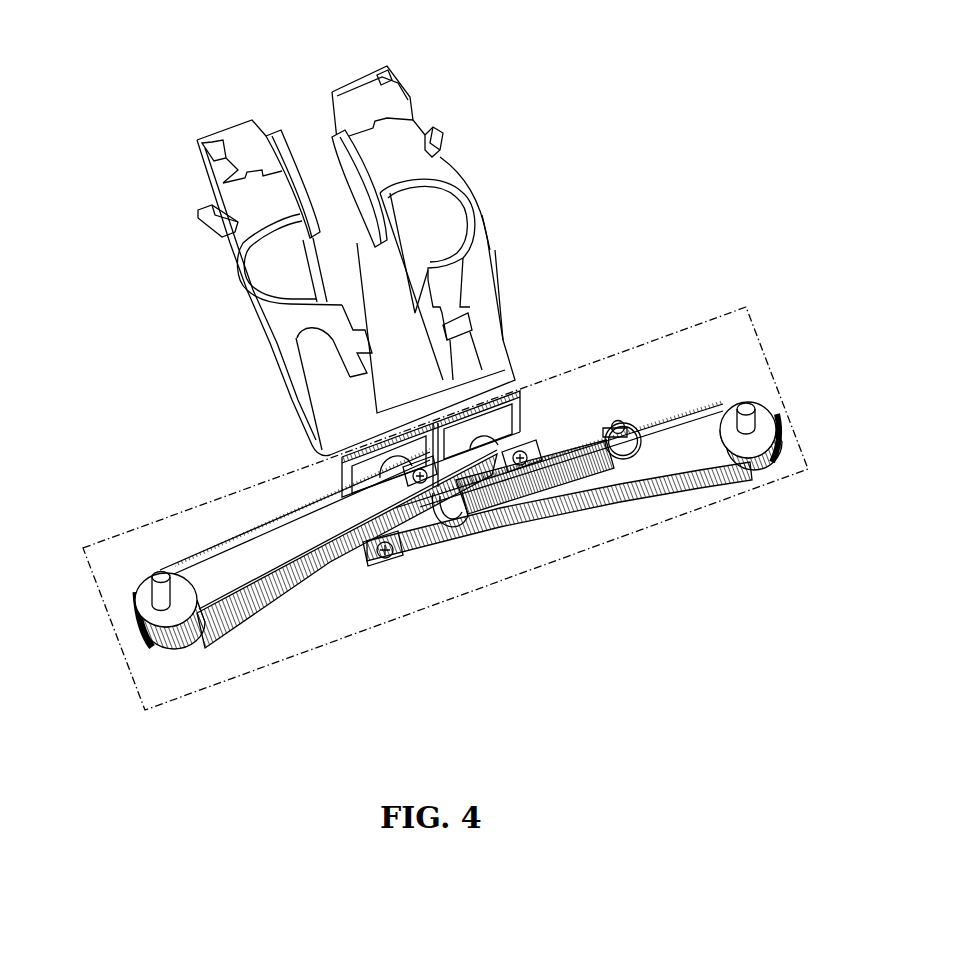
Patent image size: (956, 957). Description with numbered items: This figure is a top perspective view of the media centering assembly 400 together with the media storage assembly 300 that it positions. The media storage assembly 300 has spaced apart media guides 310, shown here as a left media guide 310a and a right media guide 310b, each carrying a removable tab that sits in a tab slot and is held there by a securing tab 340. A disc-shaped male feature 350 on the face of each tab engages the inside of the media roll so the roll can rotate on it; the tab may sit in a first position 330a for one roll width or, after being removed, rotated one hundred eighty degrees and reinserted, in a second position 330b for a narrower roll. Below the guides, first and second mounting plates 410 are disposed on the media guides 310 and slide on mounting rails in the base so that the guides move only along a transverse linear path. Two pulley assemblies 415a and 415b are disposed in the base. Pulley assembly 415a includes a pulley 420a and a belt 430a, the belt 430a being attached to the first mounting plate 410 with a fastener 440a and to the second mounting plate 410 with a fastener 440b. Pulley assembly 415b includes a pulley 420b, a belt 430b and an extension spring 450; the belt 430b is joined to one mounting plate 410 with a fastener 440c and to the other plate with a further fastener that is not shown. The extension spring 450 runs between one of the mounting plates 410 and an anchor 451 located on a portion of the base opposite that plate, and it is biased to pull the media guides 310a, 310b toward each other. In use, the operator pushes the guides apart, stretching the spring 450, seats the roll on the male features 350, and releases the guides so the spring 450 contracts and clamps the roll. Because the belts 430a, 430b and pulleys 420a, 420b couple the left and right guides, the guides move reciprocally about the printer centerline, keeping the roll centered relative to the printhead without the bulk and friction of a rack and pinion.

The media storage assembly 300 is at (658, 199).
The media guides 310 is at (472, 190).
The left media guide 310a is at (263, 350).
The right media guide 310b is at (492, 262).
The first position of removable tab 330a is at (200, 175).
The second position of removable tab 330b is at (390, 76).
The securing tabs 340 is at (450, 125).
The male features 350 is at (290, 152).
The media centering assembly 400 is at (733, 308).
The mounting plates 410 is at (522, 402).
The pulley assembly 415a is at (212, 660).
The pulley assembly 415b is at (683, 500).
The pulley 420a is at (148, 598).
The pulley 420b is at (763, 412).
The belt 430a is at (255, 615).
The belt 430b is at (585, 510).
The fastener 440a is at (450, 535).
The fastener 440b is at (543, 447).
The fastener 440c is at (390, 557).
The extension spring 450 is at (594, 434).
The anchor 451 is at (641, 437).